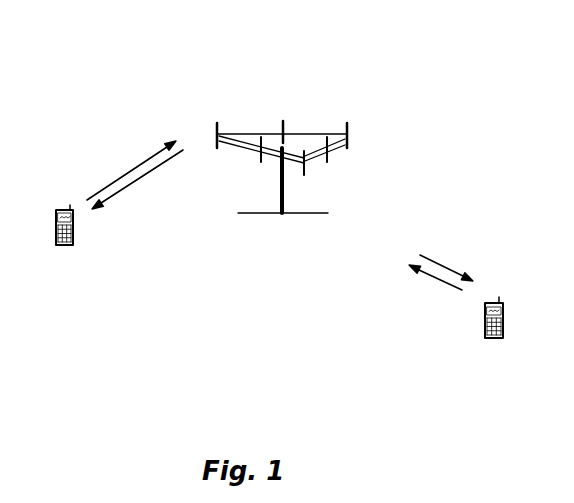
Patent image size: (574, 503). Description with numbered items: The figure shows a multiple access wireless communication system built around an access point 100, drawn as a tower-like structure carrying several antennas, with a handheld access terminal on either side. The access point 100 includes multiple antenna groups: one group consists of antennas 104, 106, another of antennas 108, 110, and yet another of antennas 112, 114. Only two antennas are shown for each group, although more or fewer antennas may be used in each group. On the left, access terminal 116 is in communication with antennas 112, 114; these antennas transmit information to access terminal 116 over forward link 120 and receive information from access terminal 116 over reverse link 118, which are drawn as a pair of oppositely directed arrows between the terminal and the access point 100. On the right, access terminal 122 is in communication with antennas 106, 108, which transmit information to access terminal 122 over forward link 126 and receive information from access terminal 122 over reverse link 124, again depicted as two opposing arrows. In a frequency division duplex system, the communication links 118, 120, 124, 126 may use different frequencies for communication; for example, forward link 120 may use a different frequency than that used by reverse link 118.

The access point 100 is at (270, 214).
The antenna 104 is at (303, 175).
The antenna 106 is at (327, 163).
The antenna 108 is at (350, 145).
The antenna 110 is at (285, 120).
The antenna 112 is at (221, 128).
The antenna 114 is at (262, 160).
The access terminal 116 is at (67, 206).
The reverse link 118 is at (130, 167).
The forward link 120 is at (145, 178).
The access terminal 122 is at (495, 299).
The reverse link 124 is at (428, 277).
The forward link 126 is at (447, 266).